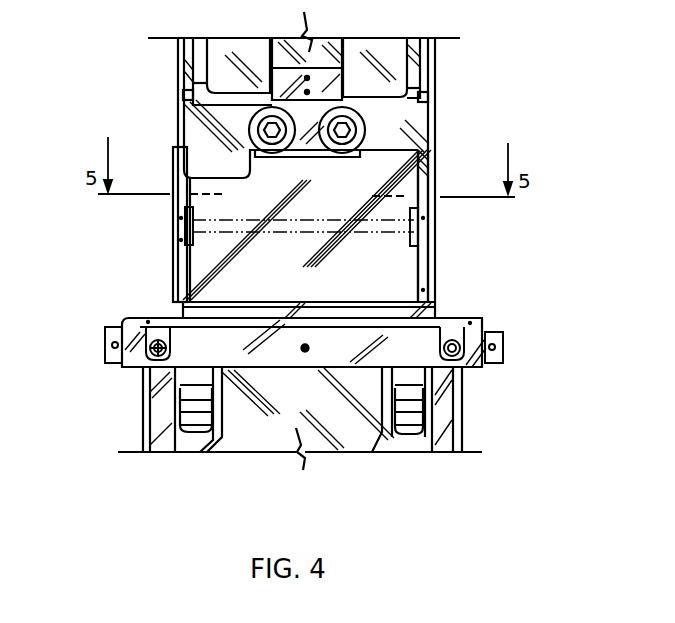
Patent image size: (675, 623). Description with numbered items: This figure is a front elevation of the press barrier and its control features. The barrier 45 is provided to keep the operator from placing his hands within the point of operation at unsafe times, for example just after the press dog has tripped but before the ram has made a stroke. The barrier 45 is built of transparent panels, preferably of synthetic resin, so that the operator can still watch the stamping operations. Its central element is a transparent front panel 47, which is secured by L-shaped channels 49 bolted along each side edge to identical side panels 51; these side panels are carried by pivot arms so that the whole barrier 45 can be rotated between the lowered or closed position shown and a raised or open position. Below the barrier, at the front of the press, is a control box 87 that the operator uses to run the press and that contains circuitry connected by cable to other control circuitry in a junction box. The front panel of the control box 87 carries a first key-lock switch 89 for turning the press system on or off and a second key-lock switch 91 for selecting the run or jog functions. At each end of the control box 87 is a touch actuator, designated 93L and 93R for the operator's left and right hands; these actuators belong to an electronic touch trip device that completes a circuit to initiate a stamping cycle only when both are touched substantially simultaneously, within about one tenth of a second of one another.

The barrier 45 is at (436, 286).
The transparent front panel 47 is at (388, 263).
The L-shaped channels 49 is at (185, 247).
The side panels 51 is at (173, 268).
The control box 87 is at (333, 355).
The first key-lock switch 89 is at (143, 365).
The second key-lock switch 91 is at (460, 367).
The touch actuator 93L is at (105, 345).
The touch actuator 93R is at (505, 348).